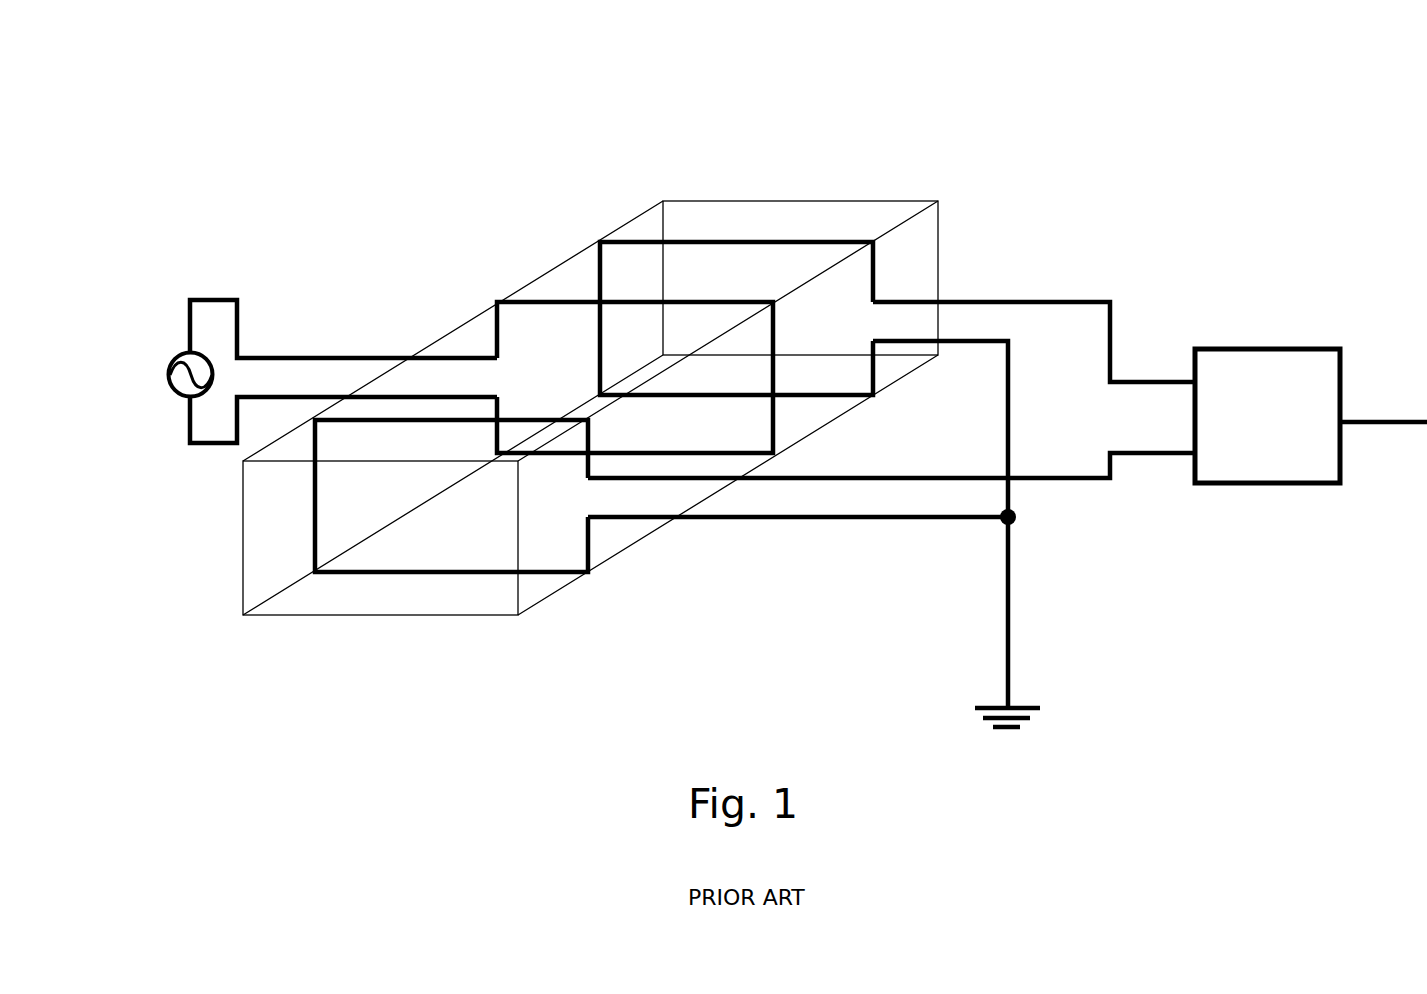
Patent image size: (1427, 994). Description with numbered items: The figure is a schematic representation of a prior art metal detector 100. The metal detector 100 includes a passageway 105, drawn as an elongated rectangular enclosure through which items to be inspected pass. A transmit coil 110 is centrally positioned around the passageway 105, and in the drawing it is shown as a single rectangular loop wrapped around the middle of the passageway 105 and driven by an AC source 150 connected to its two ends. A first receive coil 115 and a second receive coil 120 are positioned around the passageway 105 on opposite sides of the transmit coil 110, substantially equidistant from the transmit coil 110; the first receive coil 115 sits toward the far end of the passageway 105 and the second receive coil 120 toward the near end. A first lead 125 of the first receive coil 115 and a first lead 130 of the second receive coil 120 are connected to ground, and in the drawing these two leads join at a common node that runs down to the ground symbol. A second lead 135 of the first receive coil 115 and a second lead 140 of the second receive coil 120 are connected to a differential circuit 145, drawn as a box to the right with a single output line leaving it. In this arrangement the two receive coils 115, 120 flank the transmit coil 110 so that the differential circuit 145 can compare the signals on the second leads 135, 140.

The metal detector 100 is at (475, 142).
The passageway 105 is at (377, 600).
The transmit coil 110 is at (550, 298).
The first receive coil 115 is at (673, 240).
The second receive coil 120 is at (552, 575).
The first lead of the first receive coil 125 is at (973, 345).
The first lead of the second receive coil 130 is at (932, 522).
The second lead of the first receive coil 135 is at (1032, 300).
The second lead of the second receive coil 140 is at (915, 477).
The differential circuit 145 is at (1237, 345).
The AC source 150 is at (178, 355).